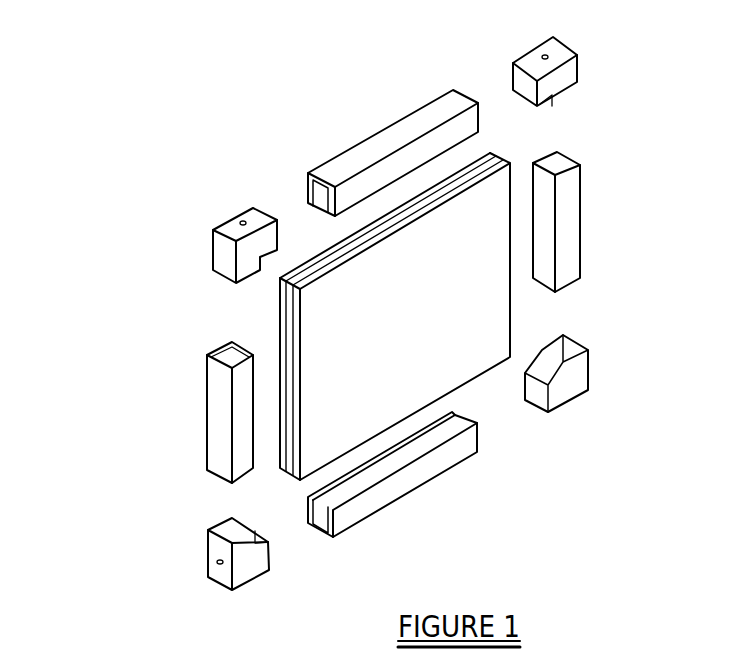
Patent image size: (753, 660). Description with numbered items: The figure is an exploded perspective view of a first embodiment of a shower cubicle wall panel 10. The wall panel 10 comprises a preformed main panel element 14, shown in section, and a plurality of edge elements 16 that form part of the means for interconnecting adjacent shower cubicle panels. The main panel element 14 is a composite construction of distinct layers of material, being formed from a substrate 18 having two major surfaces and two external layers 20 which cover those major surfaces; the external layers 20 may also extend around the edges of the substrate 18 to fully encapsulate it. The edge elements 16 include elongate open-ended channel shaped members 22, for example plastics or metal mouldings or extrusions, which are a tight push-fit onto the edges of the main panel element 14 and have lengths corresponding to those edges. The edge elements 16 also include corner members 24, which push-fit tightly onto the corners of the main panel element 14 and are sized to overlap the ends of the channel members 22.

The wall panel 10 is at (148, 325).
The main panel element 14 is at (395, 316).
The edge elements 16 is at (323, 163).
The substrate 18 is at (369, 238).
The external layers 20 is at (313, 392).
The elongate channel members 22 is at (428, 118).
The corner members 24 is at (570, 75).